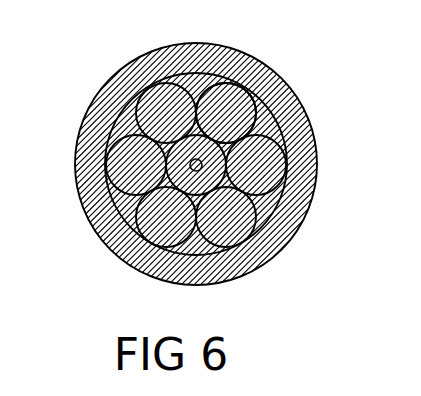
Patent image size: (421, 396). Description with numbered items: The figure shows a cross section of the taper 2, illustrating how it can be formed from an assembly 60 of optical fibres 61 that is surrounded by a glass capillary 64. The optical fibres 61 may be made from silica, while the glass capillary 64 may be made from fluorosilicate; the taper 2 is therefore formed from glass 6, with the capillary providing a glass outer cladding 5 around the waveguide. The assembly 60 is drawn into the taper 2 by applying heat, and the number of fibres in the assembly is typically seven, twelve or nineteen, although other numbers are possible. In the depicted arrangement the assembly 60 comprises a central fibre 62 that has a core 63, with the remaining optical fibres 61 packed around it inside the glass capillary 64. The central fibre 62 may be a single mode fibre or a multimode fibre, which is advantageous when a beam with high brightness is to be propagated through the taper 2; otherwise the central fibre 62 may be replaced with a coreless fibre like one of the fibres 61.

The taper 2 is at (130, 63).
The glass outer cladding 5 is at (243, 53).
The glass 6 is at (220, 100).
The assembly 60 is at (110, 248).
The optical fibres 61 is at (132, 112).
The central fibre 62 is at (231, 182).
The core 63 is at (203, 166).
The glass capillary 64 is at (253, 270).